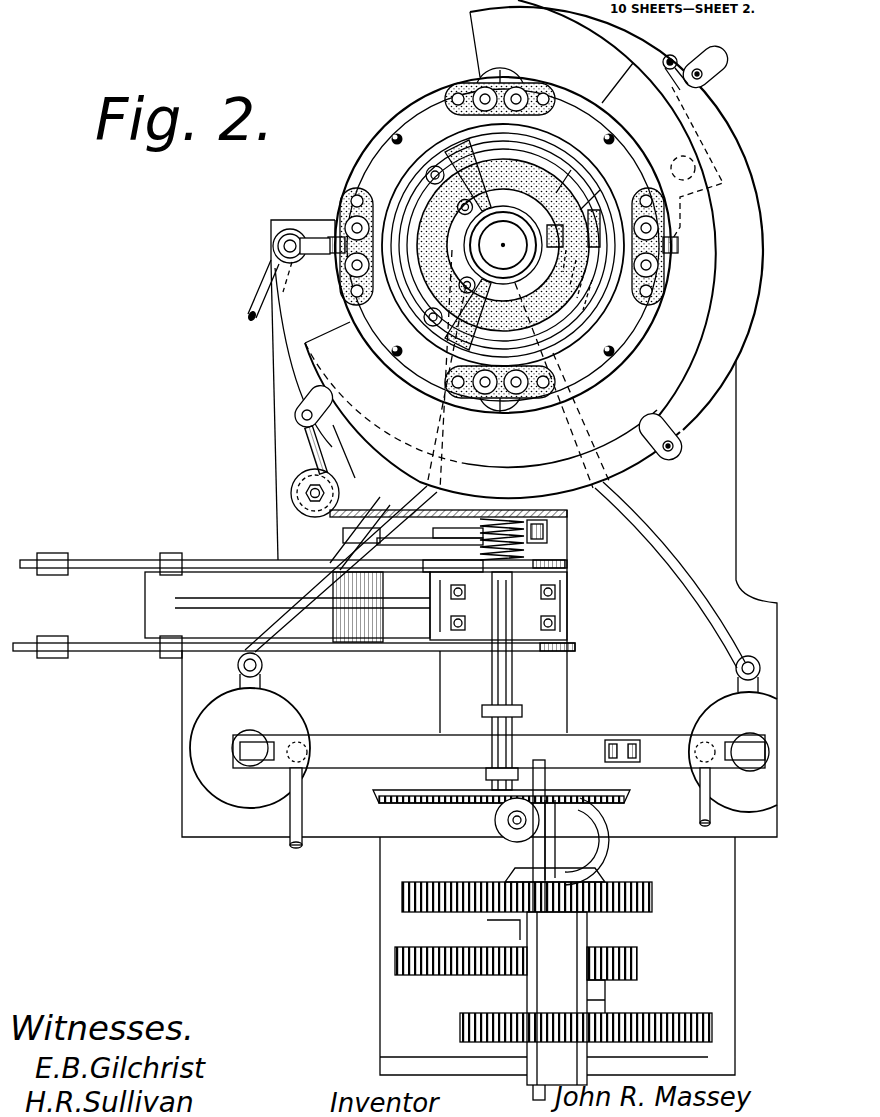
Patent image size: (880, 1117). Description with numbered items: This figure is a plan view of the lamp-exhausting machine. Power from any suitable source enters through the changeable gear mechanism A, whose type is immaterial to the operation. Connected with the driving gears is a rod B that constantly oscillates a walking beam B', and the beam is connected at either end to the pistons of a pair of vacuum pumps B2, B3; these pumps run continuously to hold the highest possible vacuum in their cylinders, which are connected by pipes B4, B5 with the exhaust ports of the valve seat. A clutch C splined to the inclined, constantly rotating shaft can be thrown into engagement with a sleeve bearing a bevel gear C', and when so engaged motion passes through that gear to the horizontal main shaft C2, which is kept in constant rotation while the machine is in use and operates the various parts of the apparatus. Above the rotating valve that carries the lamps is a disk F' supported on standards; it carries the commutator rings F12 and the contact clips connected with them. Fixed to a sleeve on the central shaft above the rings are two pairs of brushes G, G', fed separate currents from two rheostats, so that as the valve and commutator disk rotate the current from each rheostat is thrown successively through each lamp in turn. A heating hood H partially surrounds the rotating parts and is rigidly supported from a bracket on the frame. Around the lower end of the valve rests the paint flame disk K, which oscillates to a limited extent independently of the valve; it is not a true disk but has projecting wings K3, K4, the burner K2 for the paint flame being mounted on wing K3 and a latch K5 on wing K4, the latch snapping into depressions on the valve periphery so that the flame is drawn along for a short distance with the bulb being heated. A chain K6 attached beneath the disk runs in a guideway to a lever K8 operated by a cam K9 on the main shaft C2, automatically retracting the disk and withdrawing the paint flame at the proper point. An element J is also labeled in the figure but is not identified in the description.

The changeable gear mechanism A is at (553, 930).
The rod B is at (622, 731).
The walking beam B' is at (499, 735).
The vacuum pump B2 is at (720, 702).
The vacuum pump B3 is at (296, 712).
The pipe B4 is at (642, 540).
The pipe B5 is at (338, 492).
The clutch C is at (539, 841).
The bevel gear C' is at (501, 813).
The main shaft C2 is at (492, 688).
The disk F' is at (524, 245).
The commutator rings F12 is at (540, 158).
The brushes G is at (456, 245).
The brushes G' is at (443, 194).
The heating hood H is at (534, 249).
The ratchet segment J is at (562, 286).
The paint flame disk K is at (340, 229).
The burner K2 is at (303, 240).
The wing K3 is at (352, 327).
The wing K4 is at (601, 57).
The latch K5 is at (670, 242).
The chain K6 is at (312, 456).
The lever K8 is at (560, 517).
The cam K9 is at (560, 542).